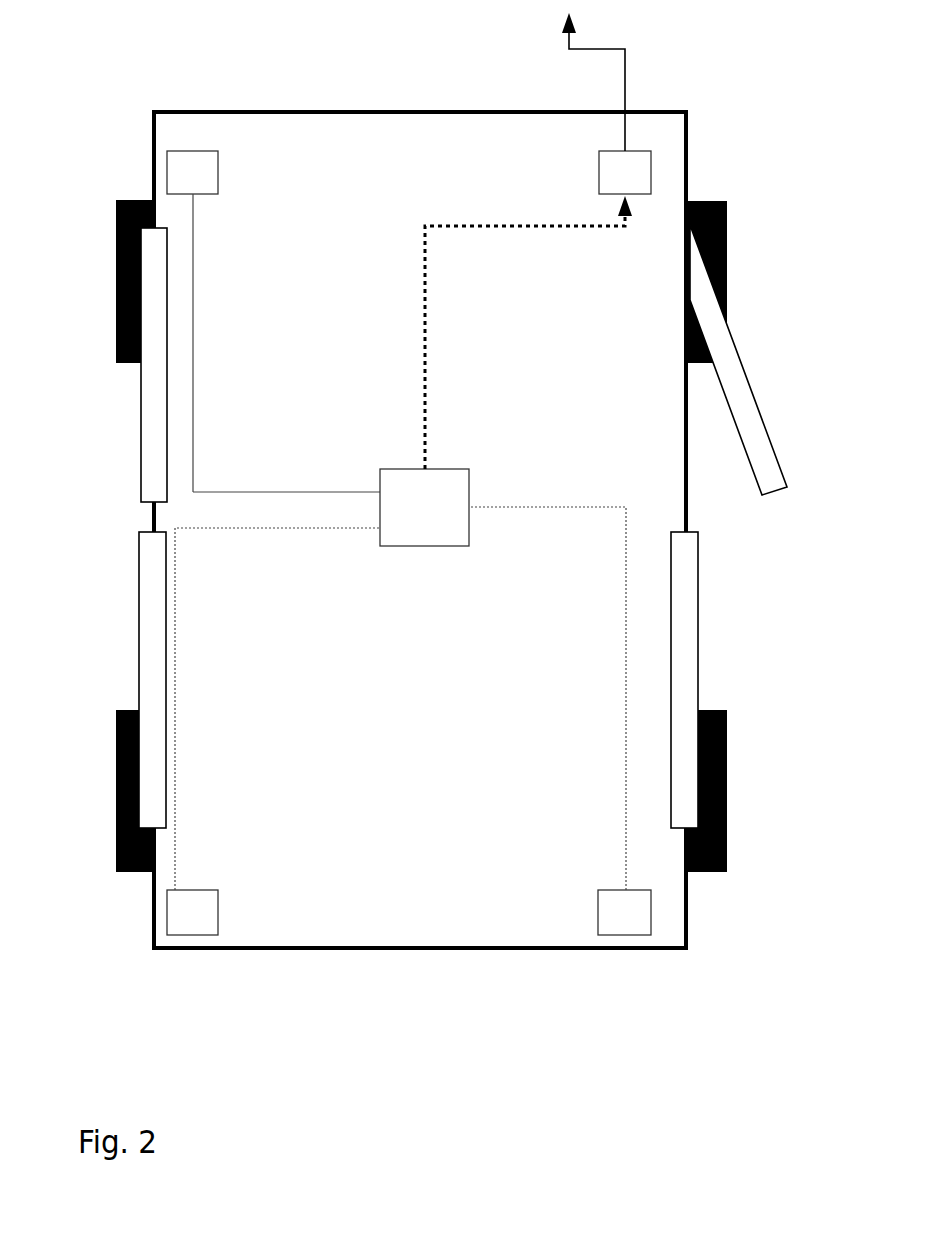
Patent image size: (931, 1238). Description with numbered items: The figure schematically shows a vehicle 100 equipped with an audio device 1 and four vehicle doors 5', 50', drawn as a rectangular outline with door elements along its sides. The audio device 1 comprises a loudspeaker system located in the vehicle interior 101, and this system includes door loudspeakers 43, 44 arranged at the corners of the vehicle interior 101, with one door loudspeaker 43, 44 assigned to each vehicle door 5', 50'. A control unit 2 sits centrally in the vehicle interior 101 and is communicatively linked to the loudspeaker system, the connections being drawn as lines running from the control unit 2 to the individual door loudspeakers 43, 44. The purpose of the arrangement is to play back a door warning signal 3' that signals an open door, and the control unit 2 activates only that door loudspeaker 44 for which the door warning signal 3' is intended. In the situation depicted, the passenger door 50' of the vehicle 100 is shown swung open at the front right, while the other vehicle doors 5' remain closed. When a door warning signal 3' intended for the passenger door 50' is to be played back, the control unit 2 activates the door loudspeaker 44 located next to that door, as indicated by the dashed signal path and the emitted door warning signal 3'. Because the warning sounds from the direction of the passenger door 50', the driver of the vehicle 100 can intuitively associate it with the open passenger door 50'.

The audio device 1 is at (352, 188).
The control unit 2 is at (469, 482).
The door warning signal 3' is at (574, 82).
The door loudspeaker 43 is at (190, 151).
The door loudspeaker 44 is at (651, 170).
The vehicle door 5' is at (419, 528).
The passenger door 50' is at (764, 340).
The vehicle 100 is at (690, 508).
The vehicle interior 101 is at (404, 935).